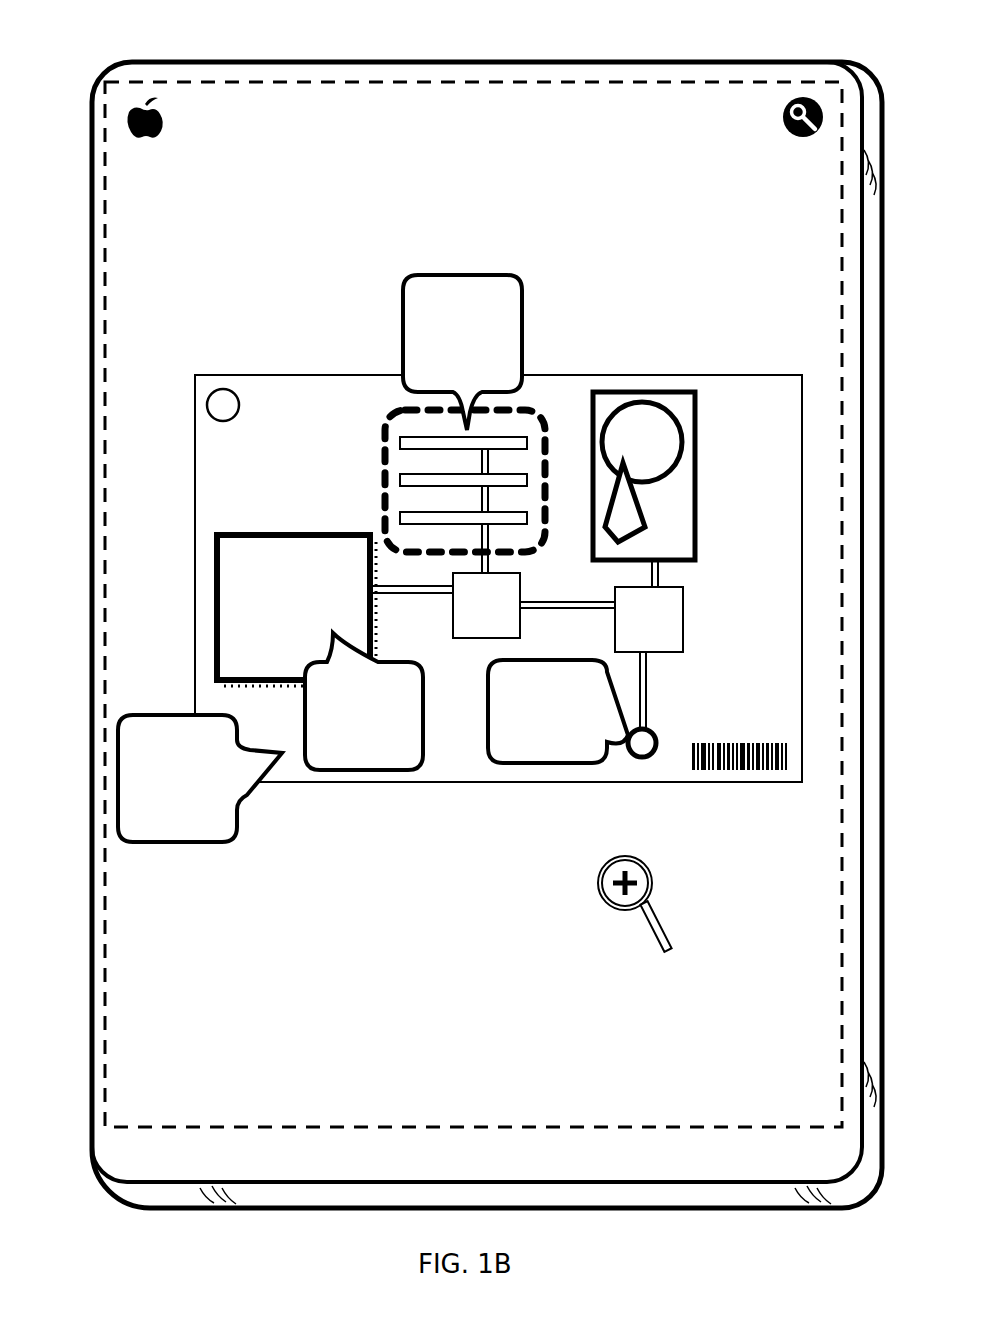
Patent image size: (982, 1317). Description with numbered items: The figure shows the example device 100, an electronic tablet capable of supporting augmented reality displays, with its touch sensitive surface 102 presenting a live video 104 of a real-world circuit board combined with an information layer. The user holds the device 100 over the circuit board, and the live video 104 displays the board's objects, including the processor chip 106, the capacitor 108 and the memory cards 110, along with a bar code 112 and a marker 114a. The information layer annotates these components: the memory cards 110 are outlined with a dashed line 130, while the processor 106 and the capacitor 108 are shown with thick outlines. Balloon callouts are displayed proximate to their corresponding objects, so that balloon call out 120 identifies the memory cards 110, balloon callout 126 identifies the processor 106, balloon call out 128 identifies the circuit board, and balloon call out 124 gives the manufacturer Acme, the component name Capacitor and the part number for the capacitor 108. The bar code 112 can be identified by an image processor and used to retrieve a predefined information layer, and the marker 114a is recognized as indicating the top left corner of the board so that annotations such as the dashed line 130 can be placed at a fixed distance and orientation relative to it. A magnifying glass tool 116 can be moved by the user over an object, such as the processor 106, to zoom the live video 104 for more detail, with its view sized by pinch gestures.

The device 100 is at (92, 48).
The touch sensitive surface 102 is at (247, 83).
The live video 104 is at (687, 343).
The processor chip 106 is at (300, 535).
The capacitor 108 is at (658, 727).
The memory cards 110 is at (380, 435).
The bar code 112 is at (742, 772).
The marker 114a is at (223, 405).
The magnifying glass tool 116 is at (600, 890).
The balloon call out 120 is at (522, 310).
The balloon call out 124 is at (560, 768).
The balloon callout 126 is at (402, 772).
The balloon call out 128 is at (250, 790).
The dashed line 130 is at (390, 418).